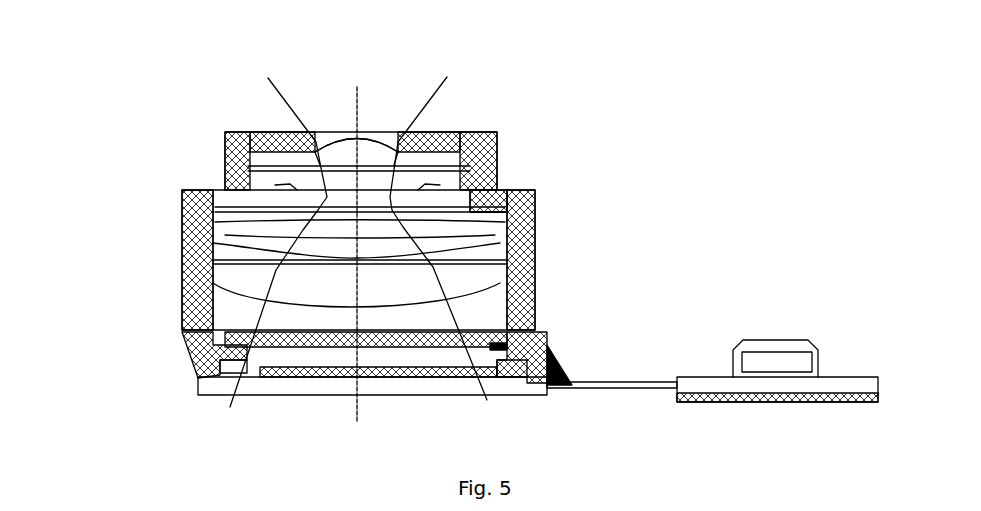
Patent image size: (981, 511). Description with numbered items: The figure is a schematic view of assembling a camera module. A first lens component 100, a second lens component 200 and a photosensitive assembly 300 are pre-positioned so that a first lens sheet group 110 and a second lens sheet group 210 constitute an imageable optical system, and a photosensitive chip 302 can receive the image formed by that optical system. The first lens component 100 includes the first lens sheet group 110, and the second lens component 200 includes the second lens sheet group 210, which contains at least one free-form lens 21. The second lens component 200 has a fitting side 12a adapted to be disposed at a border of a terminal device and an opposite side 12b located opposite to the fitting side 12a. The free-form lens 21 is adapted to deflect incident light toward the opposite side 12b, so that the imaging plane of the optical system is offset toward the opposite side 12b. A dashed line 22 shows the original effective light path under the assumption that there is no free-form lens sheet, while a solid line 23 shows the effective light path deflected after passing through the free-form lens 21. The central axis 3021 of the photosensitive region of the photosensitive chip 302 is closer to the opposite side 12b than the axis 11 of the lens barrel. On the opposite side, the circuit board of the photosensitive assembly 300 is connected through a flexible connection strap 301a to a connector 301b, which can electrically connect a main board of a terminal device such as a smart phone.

The axis 11 is at (357, 80).
The first lens sheet group 110 is at (378, 133).
The first lens component 100 is at (513, 149).
The fitting side 12a is at (182, 288).
The opposite side 12b is at (533, 322).
The second lens component 200 is at (538, 293).
The second lens sheet group 210 is at (467, 268).
The free-form lens 21 is at (288, 250).
The dashed line 22 is at (235, 380).
The solid line 23 is at (437, 250).
The photosensitive assembly 300 is at (578, 359).
The flexible connection strap 301a is at (636, 393).
The connector 301b is at (778, 342).
The photosensitive chip 302 is at (330, 380).
The central axis 3021 is at (370, 385).